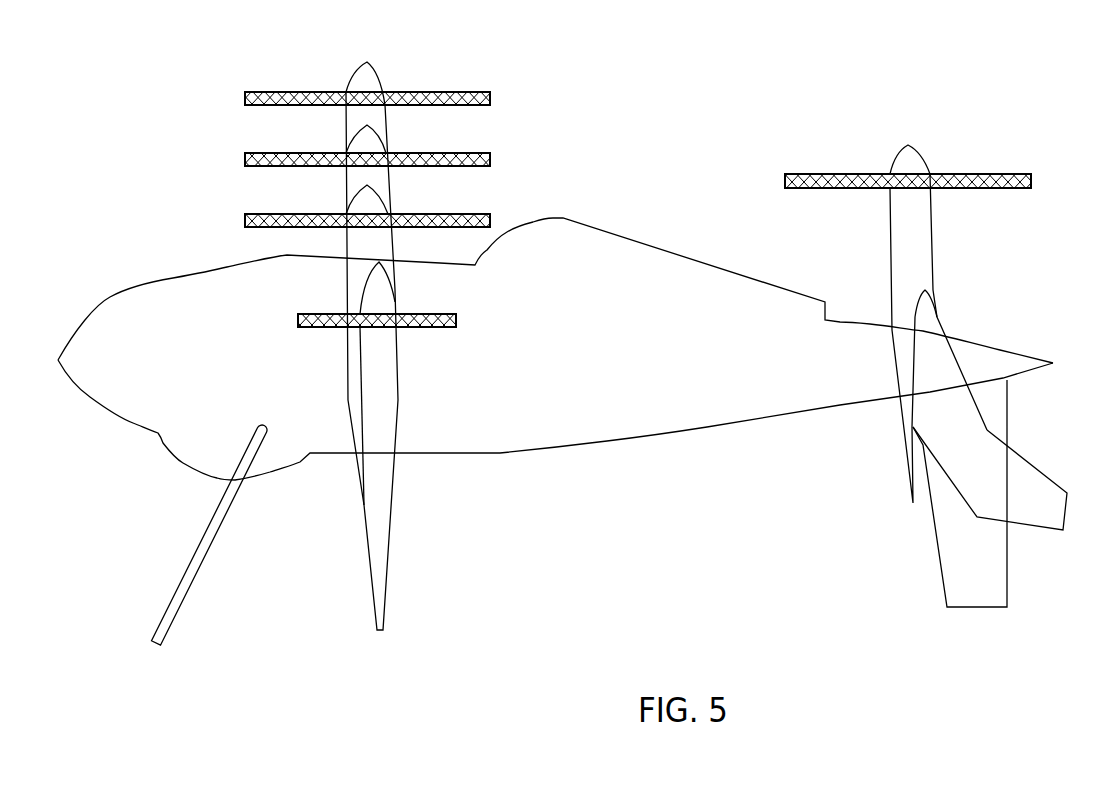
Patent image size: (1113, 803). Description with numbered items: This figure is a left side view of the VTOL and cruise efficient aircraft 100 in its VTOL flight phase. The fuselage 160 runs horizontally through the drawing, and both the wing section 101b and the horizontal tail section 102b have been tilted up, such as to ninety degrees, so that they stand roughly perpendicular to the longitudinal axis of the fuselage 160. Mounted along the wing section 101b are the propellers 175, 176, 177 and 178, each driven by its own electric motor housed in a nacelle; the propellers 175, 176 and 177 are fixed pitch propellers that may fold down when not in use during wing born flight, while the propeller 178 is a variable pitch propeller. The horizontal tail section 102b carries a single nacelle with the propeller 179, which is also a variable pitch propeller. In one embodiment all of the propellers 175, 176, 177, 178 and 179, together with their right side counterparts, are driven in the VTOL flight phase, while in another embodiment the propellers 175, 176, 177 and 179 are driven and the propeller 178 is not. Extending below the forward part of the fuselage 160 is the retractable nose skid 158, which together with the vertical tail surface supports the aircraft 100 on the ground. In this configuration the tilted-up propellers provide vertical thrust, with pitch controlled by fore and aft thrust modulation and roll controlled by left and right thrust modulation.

The aircraft 100 is at (122, 193).
The wing section 101b is at (342, 73).
The horizontal tail section 102b is at (873, 162).
The nose skid 158 is at (200, 567).
The fuselage 160 is at (177, 280).
The propeller 175 is at (490, 92).
The propeller 176 is at (490, 155).
The propeller 177 is at (490, 215).
The propeller 178 is at (390, 312).
The propeller 179 is at (1031, 176).